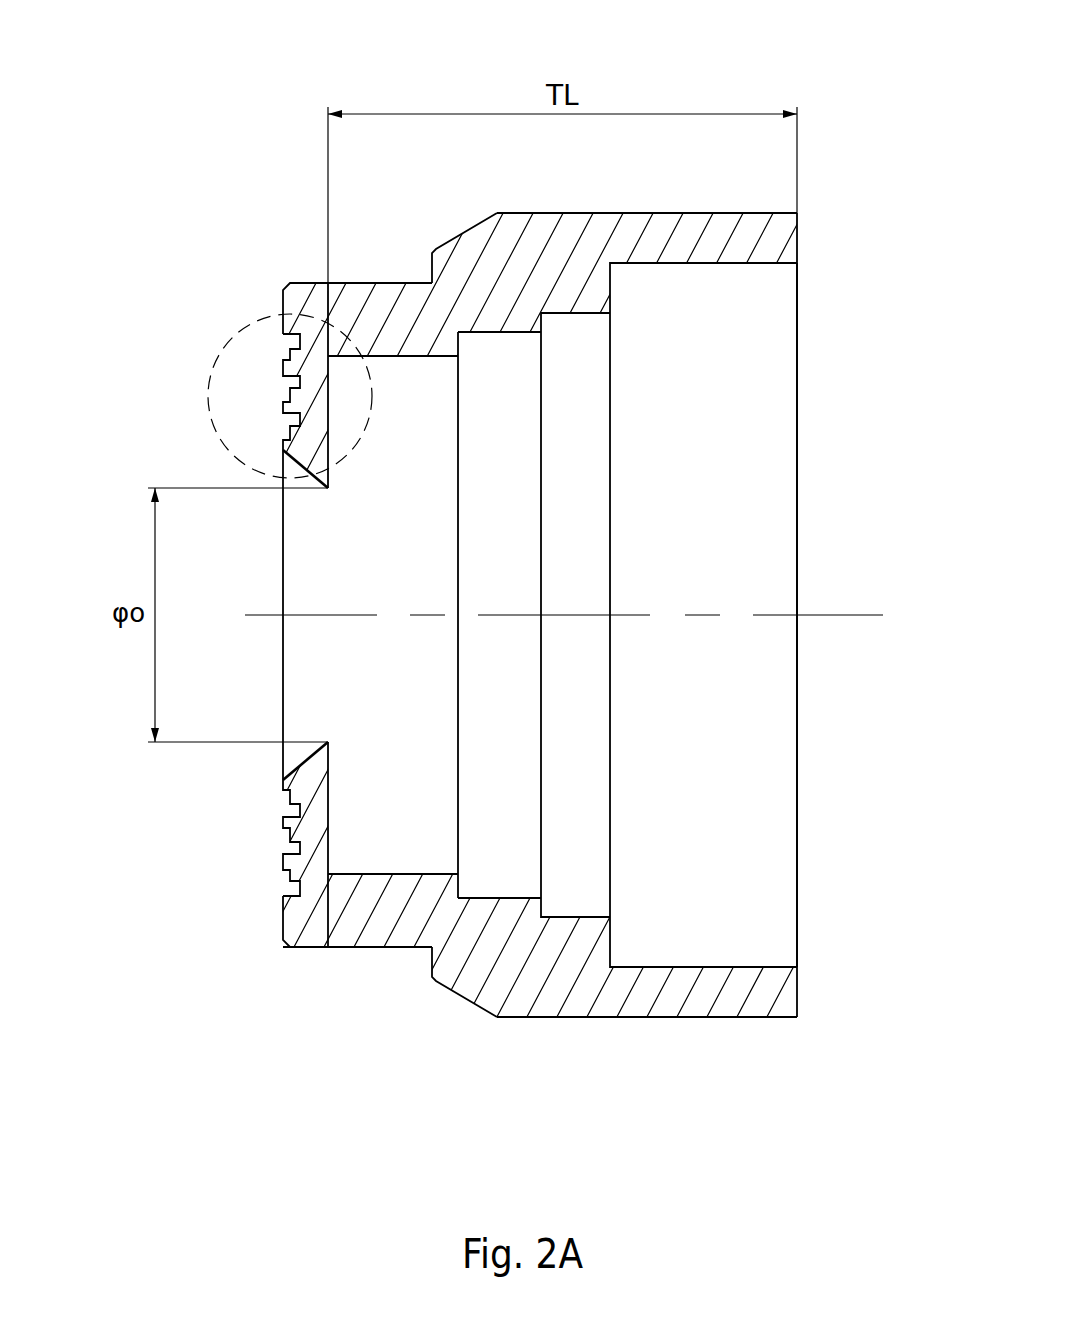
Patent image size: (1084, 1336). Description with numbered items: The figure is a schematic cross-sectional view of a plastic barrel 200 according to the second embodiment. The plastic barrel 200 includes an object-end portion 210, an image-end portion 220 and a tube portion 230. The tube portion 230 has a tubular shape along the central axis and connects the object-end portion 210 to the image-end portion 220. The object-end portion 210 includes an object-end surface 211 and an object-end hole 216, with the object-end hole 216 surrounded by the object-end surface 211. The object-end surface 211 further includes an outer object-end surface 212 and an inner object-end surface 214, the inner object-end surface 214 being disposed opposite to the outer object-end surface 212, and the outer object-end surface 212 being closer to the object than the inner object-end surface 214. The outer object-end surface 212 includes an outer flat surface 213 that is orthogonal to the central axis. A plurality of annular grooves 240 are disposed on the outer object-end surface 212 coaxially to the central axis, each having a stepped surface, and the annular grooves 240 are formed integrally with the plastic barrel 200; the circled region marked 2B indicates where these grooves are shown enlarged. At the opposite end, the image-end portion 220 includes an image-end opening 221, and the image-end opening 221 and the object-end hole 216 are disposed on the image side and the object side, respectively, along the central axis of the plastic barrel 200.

The plastic barrel 200 is at (215, 36).
The object-end portion 210 is at (283, 323).
The object-end surface 211 is at (283, 452).
The outer object-end surface 212 is at (283, 783).
The outer flat surface 213 is at (283, 905).
The inner object-end surface 214 is at (390, 356).
The object-end hole 216 is at (297, 648).
The image-end portion 220 is at (797, 238).
The image-end opening 221 is at (775, 463).
The tube portion 230 is at (683, 213).
The annular grooves 240 is at (283, 380).
The detail region shown in Fig. 2B is at (208, 398).